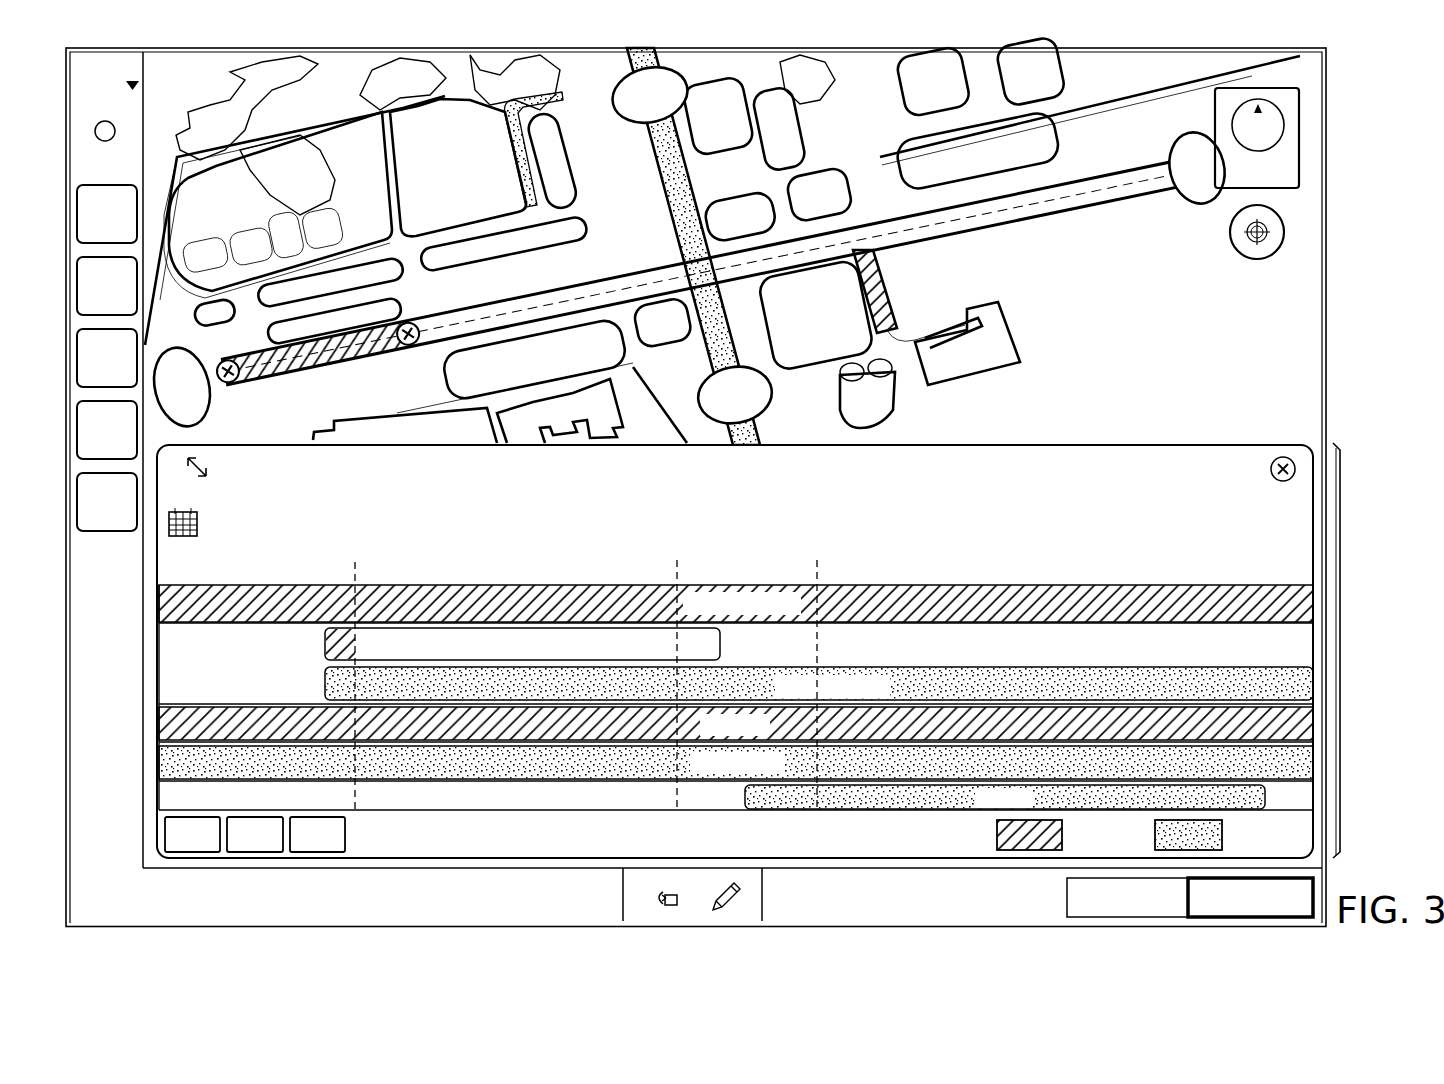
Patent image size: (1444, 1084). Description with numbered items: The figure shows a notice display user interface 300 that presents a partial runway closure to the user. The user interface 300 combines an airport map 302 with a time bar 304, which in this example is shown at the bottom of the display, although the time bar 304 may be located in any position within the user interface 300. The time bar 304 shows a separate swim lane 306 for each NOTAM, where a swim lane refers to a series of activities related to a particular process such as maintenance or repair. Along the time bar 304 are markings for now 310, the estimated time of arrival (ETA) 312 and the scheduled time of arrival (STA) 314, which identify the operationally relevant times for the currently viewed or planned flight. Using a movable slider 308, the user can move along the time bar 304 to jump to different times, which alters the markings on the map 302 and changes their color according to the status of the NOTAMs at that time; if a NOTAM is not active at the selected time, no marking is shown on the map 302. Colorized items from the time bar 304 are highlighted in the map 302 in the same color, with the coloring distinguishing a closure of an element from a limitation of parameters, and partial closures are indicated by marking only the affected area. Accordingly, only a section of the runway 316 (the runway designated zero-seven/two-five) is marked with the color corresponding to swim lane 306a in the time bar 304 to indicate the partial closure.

The user interface 300 is at (1370, 130).
The map 302 is at (722, 242).
The time bar 304 is at (776, 650).
The swim lane 306 is at (198, 618).
The swim lane 306a is at (323, 651).
The movable slider 308 is at (343, 797).
The now marking 310 is at (383, 547).
The estimated time of arrival (ETA) marking 312 is at (654, 548).
The scheduled time of arrival (STA) marking 314 is at (836, 548).
The Runway 07/25 316 is at (264, 382).